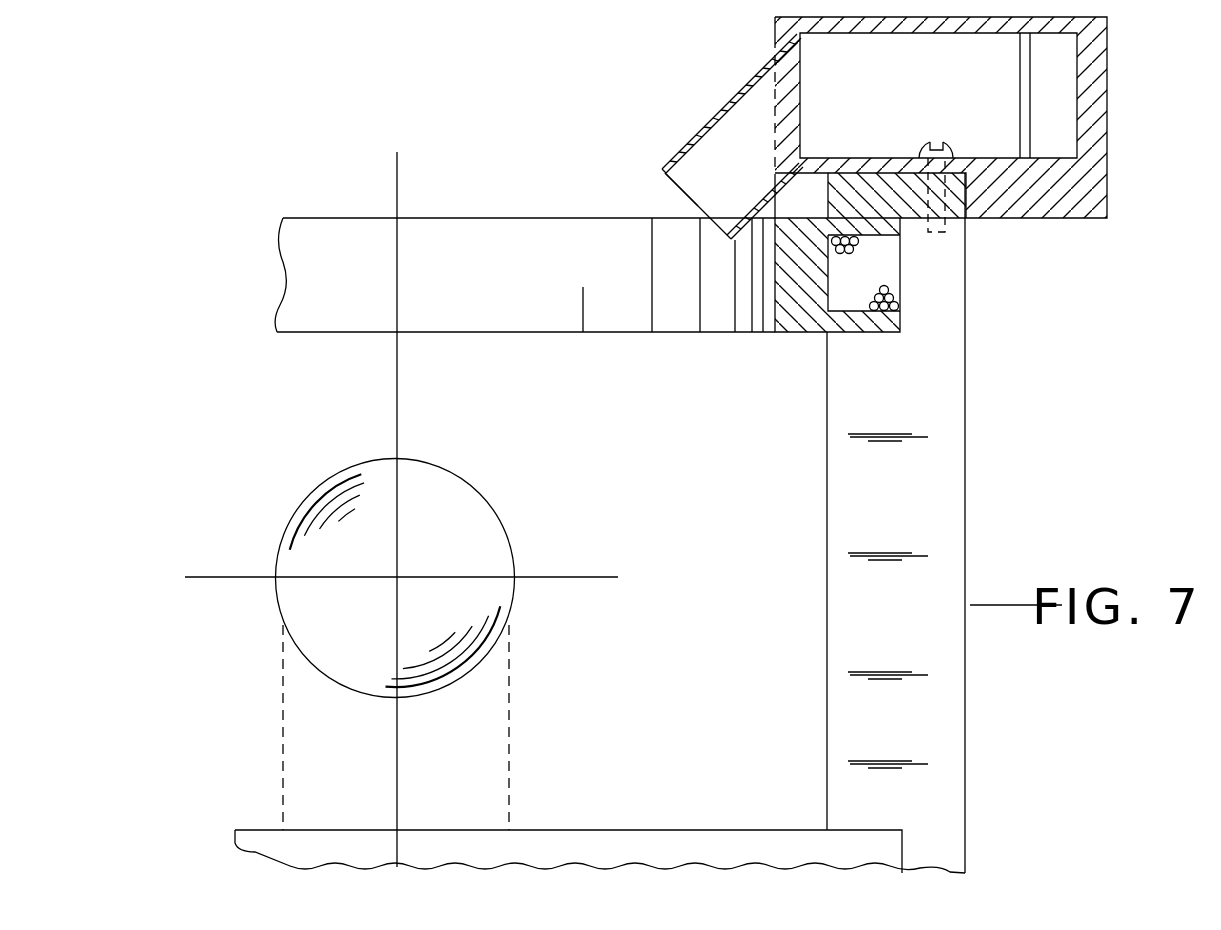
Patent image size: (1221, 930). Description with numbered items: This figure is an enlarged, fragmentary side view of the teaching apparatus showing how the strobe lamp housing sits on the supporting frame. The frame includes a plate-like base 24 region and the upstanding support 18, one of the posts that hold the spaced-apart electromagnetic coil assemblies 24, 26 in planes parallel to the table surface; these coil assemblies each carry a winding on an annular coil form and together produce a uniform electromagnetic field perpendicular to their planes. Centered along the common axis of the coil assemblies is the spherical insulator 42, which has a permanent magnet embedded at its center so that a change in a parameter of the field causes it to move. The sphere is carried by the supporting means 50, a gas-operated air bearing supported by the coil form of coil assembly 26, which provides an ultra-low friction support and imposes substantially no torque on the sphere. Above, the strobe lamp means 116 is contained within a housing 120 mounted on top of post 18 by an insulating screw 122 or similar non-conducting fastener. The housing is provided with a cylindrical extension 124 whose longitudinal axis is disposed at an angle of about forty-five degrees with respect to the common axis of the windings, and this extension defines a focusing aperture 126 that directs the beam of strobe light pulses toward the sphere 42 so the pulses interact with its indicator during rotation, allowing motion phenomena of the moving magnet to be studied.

The upstanding support 18 is at (972, 492).
The electromagnetic coil assembly 24 is at (640, 822).
The electromagnetic coil assembly 26 is at (721, 340).
The spherical insulator 42 is at (512, 523).
The supporting means 50 is at (272, 738).
The strobe lamp means 116 is at (688, 135).
The housing 120 is at (1110, 88).
The insulating screw 122 is at (921, 146).
The cylindrical extension 124 is at (700, 130).
The focusing aperture 126 is at (665, 173).